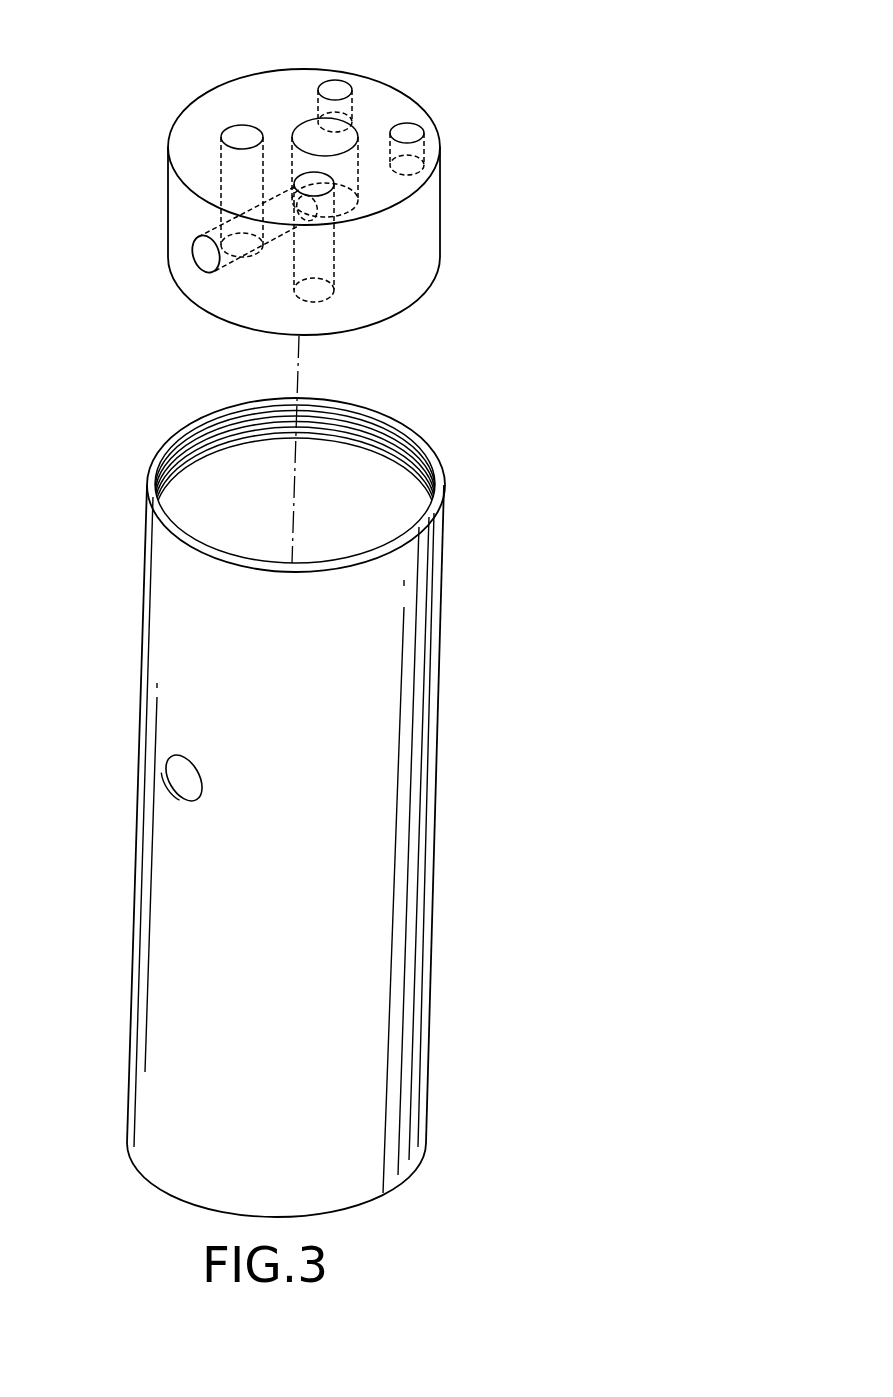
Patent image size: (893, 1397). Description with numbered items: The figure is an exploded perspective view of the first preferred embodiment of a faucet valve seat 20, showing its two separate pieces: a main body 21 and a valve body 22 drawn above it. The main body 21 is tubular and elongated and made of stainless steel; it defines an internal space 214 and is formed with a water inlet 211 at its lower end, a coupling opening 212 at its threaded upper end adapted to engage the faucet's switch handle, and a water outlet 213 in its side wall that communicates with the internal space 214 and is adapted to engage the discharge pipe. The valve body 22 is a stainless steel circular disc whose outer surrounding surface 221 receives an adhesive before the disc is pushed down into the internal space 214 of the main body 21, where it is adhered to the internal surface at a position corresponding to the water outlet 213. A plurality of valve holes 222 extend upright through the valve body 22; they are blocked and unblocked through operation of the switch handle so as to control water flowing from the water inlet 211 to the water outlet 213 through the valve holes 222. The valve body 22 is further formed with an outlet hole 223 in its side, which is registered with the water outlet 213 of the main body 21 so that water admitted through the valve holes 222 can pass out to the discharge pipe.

The faucet valve seat 20 is at (481, 762).
The main body 21 is at (405, 650).
The water inlet 211 is at (382, 1193).
The coupling opening 212 is at (410, 443).
The water outlet 213 is at (187, 775).
The internal space 214 is at (263, 537).
The valve body 22 is at (390, 97).
The outer surrounding surface 221 is at (422, 255).
The valve holes 222 is at (314, 176).
The outlet hole 223 is at (207, 252).